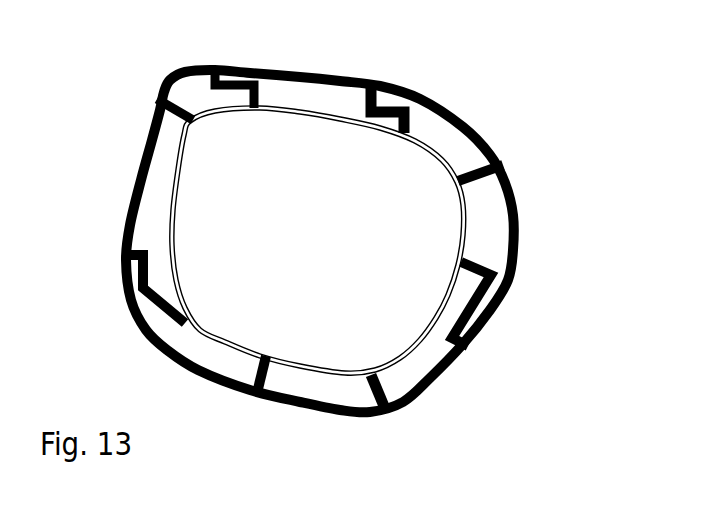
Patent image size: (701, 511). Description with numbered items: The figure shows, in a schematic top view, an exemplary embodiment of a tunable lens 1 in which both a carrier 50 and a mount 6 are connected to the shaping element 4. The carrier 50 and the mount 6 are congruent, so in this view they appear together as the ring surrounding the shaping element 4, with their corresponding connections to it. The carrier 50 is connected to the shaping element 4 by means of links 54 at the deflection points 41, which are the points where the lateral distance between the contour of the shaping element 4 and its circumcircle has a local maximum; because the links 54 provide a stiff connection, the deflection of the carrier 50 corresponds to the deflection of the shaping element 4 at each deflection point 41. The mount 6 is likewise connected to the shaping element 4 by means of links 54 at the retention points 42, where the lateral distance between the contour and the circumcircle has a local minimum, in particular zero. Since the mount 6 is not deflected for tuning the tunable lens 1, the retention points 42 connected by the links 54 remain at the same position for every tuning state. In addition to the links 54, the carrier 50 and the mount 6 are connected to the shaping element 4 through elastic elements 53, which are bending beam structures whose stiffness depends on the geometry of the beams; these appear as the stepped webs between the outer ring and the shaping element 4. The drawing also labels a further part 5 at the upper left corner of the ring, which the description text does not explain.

The tunable lens 1 is at (553, 215).
The shaping element 4 is at (168, 203).
The connecting element 5 is at (158, 106).
The mount 6 is at (348, 72).
The carrier 50 is at (320, 213).
The elastic element 53 is at (401, 110).
The link 54 is at (495, 170).
The deflection point 41 is at (207, 122).
The retention point 42 is at (258, 117).